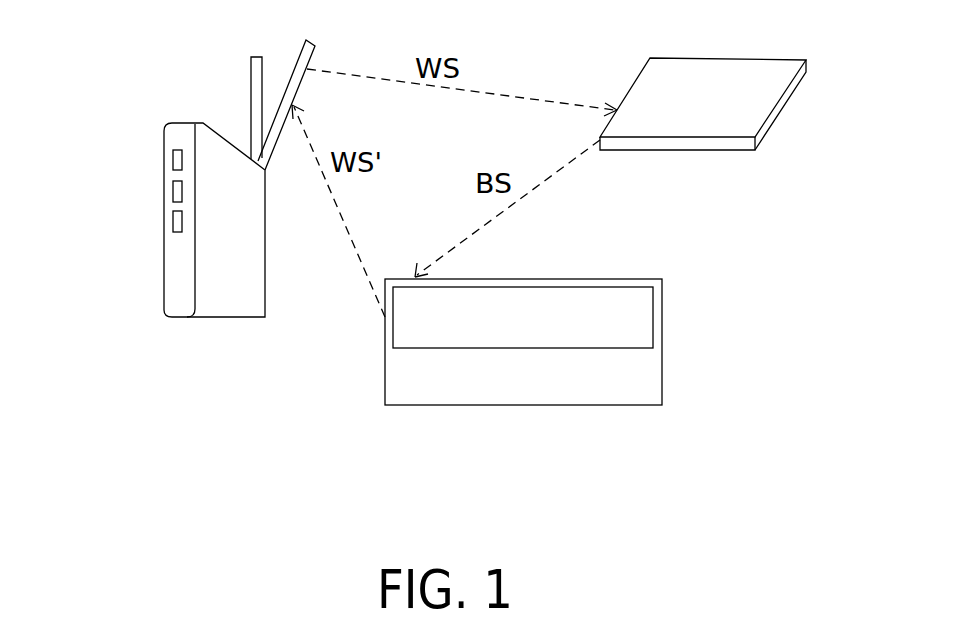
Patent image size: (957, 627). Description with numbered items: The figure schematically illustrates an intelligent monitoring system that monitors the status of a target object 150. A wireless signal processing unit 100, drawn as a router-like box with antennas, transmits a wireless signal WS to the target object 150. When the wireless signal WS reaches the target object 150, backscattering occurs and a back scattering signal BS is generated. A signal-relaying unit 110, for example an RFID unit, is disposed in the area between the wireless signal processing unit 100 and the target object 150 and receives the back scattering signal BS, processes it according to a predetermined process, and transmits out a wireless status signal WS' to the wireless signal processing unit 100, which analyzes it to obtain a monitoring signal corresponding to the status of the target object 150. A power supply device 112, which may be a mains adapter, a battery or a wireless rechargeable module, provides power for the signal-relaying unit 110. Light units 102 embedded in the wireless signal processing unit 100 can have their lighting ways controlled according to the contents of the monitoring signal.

The wireless signal processing unit 100 is at (243, 317).
The light units 102 is at (173, 163).
The signal-relaying unit 110 is at (485, 405).
The power supply device 112 is at (653, 320).
The target object 150 is at (720, 150).